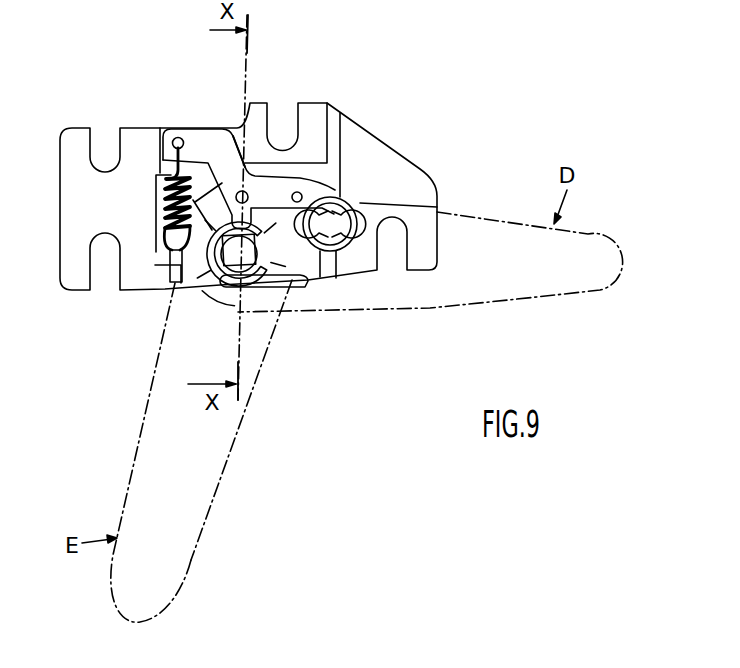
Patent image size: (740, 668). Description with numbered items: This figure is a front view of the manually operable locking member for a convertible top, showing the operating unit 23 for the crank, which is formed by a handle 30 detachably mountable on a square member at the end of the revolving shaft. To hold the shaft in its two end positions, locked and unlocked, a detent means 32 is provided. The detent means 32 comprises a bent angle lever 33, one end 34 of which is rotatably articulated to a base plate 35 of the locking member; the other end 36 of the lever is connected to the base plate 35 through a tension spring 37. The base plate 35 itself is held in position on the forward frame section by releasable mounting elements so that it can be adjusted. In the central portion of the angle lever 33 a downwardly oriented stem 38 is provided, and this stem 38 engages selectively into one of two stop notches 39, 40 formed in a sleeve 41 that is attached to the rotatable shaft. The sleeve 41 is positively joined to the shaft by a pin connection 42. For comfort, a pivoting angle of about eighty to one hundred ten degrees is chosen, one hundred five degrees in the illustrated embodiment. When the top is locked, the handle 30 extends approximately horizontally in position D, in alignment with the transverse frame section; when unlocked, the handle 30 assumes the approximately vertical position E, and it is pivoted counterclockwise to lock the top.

The operating unit 23 is at (134, 445).
The handle 30 is at (193, 529).
The detent means 32 is at (200, 122).
The bent angle lever 33 is at (245, 146).
The end of the angle lever 34 is at (353, 203).
The base plate 35 is at (380, 143).
The other end of the lever 36 is at (160, 131).
The tension spring 37 is at (160, 202).
The stem 38 is at (249, 193).
The stop notch 39 is at (206, 262).
The stop notch 40 is at (287, 281).
The sleeve 41 is at (232, 288).
The pin connection 42 is at (262, 270).